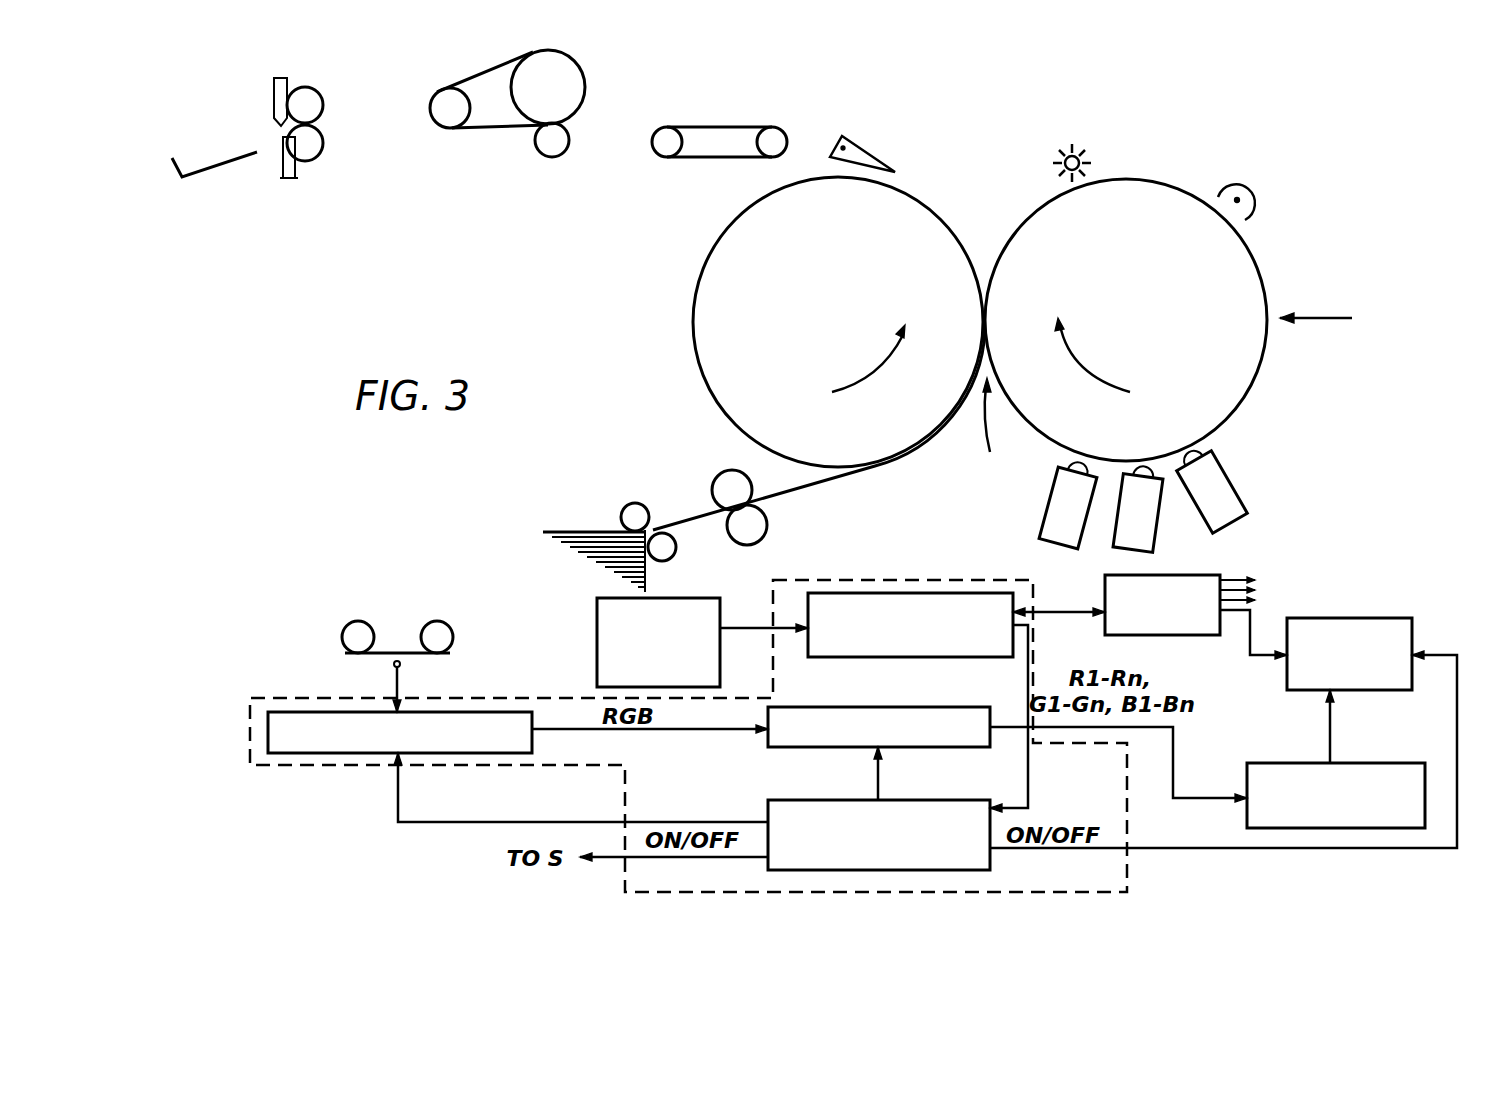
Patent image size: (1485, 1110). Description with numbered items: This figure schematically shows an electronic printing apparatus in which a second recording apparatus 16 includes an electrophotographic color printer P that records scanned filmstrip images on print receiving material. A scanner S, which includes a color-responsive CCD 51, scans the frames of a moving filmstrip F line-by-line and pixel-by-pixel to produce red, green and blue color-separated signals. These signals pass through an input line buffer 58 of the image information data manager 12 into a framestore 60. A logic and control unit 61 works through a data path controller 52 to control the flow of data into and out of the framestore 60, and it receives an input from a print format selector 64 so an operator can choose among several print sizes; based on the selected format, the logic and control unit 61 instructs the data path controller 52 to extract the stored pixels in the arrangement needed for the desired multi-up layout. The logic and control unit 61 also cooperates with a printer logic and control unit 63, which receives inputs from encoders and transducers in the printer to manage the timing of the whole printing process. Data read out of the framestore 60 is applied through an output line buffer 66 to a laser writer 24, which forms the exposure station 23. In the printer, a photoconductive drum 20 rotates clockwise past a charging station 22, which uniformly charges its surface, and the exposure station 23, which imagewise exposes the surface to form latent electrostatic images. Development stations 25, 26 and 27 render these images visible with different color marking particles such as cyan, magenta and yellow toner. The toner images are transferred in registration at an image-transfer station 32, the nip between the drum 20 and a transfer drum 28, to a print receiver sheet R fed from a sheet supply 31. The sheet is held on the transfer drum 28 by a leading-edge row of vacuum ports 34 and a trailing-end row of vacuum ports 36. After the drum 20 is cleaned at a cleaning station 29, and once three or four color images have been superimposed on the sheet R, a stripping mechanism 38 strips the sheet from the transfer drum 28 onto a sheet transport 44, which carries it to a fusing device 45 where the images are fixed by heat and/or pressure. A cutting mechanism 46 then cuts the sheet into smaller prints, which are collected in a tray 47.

The tray 47 is at (199, 150).
The cutting mechanism 46 is at (327, 97).
The fusing device 45 is at (607, 80).
The sheet transport 44 is at (730, 127).
The stripping mechanism 38 is at (862, 152).
The transfer drum 28 is at (937, 208).
The row of vacuum ports 36 is at (716, 250).
The cleaning station 29 is at (1065, 152).
The photoconductive drum 20 is at (1156, 185).
The charging station 22 is at (1253, 192).
The exposure station 23 is at (1310, 318).
The second recording apparatus 16 is at (1405, 398).
The row of vacuum ports 34 is at (930, 420).
The image-transfer station 32 is at (1002, 436).
The sheet supply 31 is at (568, 530).
The development station 27 is at (1070, 530).
The development station 26 is at (1150, 528).
The development station 25 is at (1230, 520).
The image information data manager 12 is at (893, 575).
The print format selector 64 is at (597, 640).
The logic and control unit 61 is at (878, 660).
The logic and control unit 63 is at (1190, 636).
The laser writer 24 is at (1412, 624).
The output line buffer 66 is at (1370, 763).
The framestore 60 is at (780, 748).
The data path controller 52 is at (935, 800).
The input line buffer 58 is at (310, 753).
The color-responsive CCD 51 is at (403, 665).
The electrophotographic color printer P is at (1092, 122).
The print receiver sheet R is at (845, 482).
The scanner S is at (477, 633).
The filmstrip F is at (375, 655).